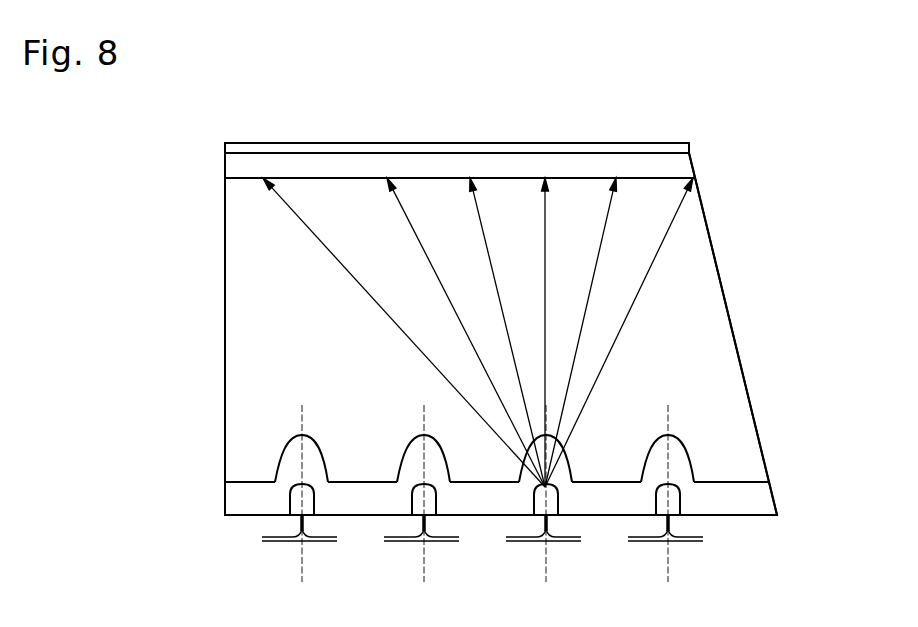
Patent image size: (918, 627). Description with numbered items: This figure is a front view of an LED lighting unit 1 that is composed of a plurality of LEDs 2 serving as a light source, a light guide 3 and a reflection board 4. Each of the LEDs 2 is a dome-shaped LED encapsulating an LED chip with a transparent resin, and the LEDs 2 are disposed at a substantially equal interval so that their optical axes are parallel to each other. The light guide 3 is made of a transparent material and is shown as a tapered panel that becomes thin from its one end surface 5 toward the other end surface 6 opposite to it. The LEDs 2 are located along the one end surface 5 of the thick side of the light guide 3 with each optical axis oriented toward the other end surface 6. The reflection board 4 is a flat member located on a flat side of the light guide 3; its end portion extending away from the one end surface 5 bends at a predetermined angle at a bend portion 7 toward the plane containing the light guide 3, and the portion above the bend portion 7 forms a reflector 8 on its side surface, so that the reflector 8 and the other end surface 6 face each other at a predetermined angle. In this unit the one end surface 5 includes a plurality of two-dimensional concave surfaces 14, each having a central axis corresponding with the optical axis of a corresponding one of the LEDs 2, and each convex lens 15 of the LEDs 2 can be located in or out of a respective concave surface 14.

The LED lighting unit 1 is at (719, 123).
The LED 2 is at (290, 505).
The light guide 3 is at (733, 378).
The reflection board 4 is at (765, 503).
The one end surface 5 is at (250, 482).
The other end surface 6 is at (250, 178).
The bend portion 7 is at (692, 163).
The reflector 8 is at (643, 168).
The concave surface 14 is at (283, 447).
The convex lens 15 is at (292, 481).